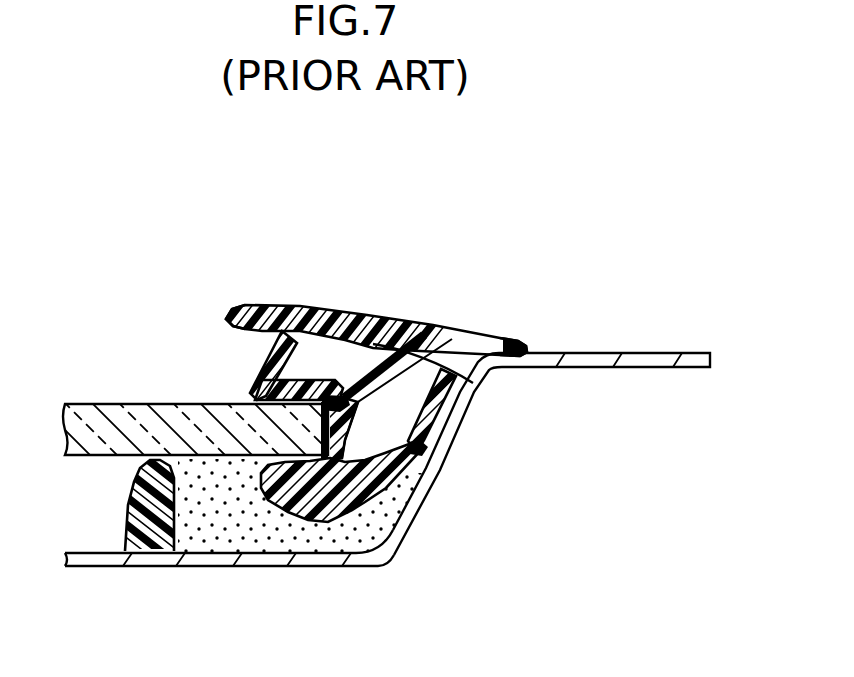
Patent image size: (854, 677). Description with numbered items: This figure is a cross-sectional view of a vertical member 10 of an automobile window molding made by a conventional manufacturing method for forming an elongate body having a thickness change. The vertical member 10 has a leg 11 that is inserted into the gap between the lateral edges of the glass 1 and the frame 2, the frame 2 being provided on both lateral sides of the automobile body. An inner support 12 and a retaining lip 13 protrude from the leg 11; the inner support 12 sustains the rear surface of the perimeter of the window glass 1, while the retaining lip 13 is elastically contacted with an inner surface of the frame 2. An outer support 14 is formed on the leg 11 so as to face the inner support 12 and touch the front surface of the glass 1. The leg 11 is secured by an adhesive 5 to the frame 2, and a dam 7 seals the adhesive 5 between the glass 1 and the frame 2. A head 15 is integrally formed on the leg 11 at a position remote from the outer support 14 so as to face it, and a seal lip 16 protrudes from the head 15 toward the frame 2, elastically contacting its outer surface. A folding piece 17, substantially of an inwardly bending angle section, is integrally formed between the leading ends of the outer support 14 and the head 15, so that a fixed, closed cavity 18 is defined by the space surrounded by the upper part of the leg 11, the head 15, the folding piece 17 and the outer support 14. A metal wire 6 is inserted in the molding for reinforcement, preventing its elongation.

The glass 1 is at (75, 400).
The frame 2 is at (607, 353).
The adhesive 5 is at (237, 547).
The metal wire 6 is at (374, 350).
The dam 7 is at (149, 553).
The vertical member 10 is at (335, 308).
The leg 11 is at (388, 488).
The inner support 12 is at (283, 470).
The retaining lip 13 is at (426, 450).
The outer support 14 is at (253, 392).
The head 15 is at (313, 303).
The seal lip 16 is at (503, 341).
The folding piece 17 is at (250, 334).
The fixed, closed cavity 18 is at (470, 386).